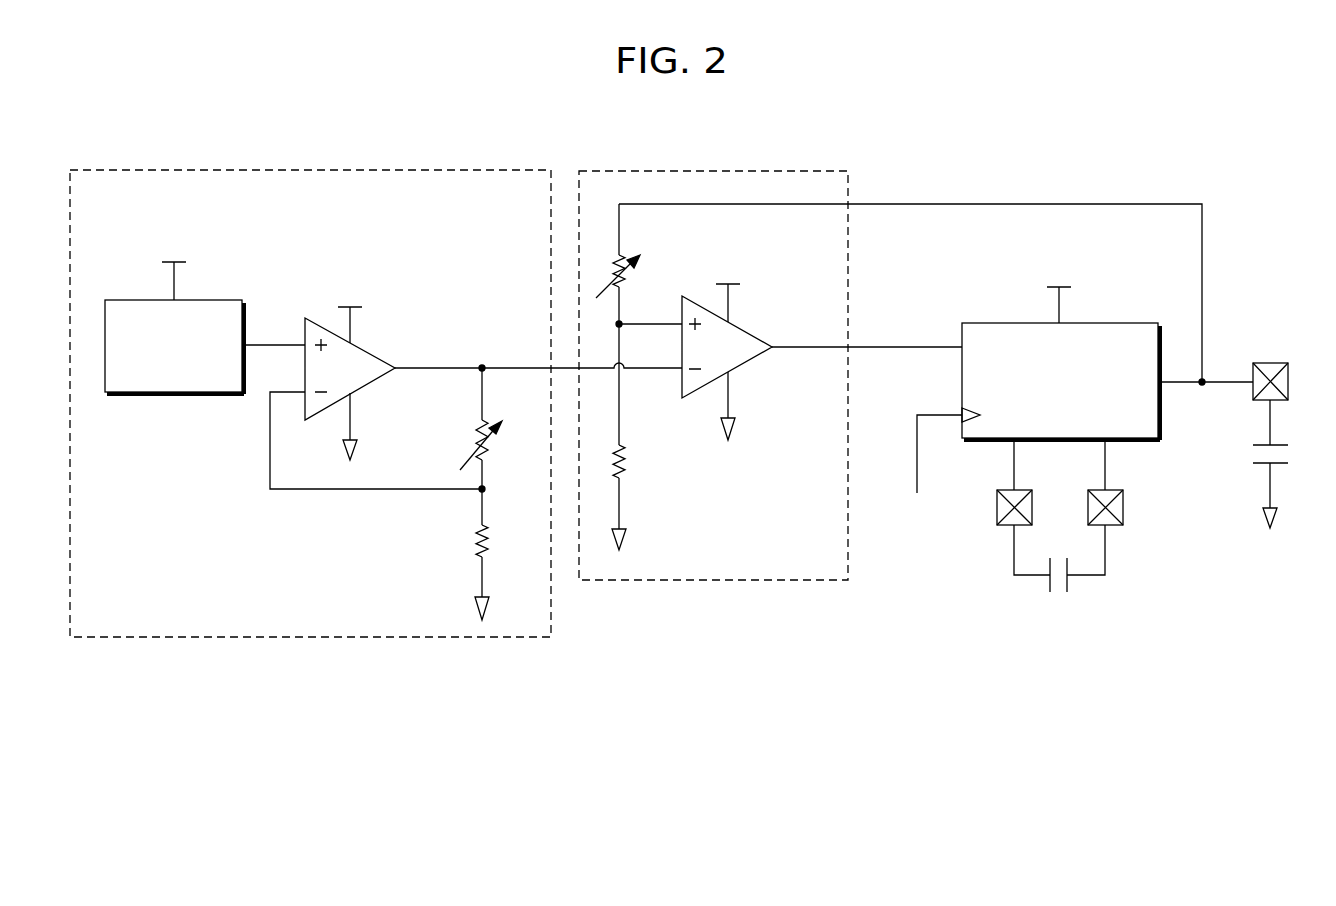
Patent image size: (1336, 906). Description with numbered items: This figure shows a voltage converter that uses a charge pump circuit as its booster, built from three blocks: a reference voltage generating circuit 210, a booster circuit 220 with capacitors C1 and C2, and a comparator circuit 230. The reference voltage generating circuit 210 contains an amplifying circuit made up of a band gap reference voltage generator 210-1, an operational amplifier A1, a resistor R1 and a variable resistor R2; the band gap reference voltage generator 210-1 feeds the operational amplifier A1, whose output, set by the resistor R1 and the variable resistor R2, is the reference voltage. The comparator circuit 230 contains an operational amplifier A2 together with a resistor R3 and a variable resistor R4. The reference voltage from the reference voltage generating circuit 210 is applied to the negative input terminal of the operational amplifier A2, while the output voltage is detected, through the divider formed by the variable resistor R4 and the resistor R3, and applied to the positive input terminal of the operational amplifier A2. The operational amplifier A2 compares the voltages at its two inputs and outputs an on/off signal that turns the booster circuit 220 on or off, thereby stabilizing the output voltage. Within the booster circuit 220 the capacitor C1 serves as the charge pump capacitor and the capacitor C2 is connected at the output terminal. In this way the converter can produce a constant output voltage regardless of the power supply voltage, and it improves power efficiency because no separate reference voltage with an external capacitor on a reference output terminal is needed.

The reference voltage generating circuit 210 is at (330, 170).
The band gap reference voltage generator 210-1 is at (200, 299).
The booster circuit 220 is at (1103, 323).
The comparator circuit 230 is at (717, 170).
The operational amplifier A1 is at (370, 350).
The operational amplifier A2 is at (747, 327).
The resistor R1 is at (499, 554).
The variable resistor R2 is at (496, 428).
The resistor R3 is at (636, 437).
The variable resistor R4 is at (634, 264).
The capacitor C1 is at (1060, 534).
The capacitor C2 is at (1283, 429).